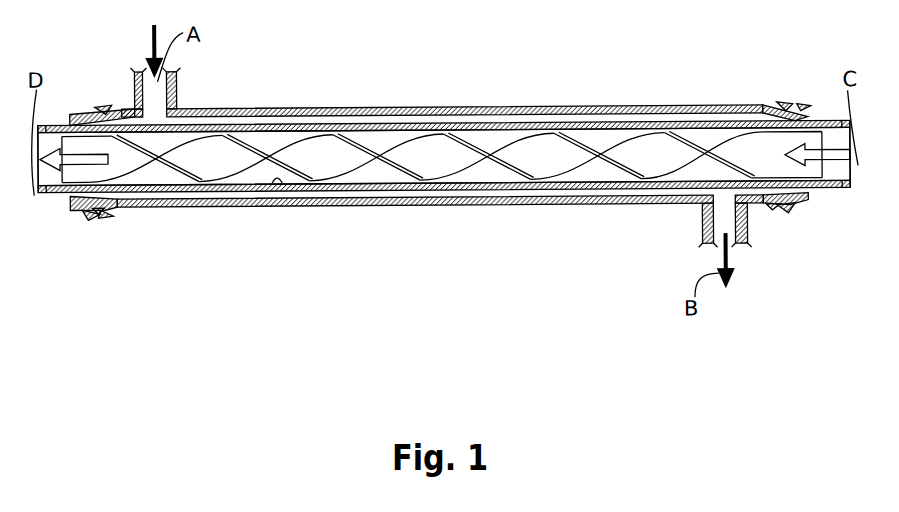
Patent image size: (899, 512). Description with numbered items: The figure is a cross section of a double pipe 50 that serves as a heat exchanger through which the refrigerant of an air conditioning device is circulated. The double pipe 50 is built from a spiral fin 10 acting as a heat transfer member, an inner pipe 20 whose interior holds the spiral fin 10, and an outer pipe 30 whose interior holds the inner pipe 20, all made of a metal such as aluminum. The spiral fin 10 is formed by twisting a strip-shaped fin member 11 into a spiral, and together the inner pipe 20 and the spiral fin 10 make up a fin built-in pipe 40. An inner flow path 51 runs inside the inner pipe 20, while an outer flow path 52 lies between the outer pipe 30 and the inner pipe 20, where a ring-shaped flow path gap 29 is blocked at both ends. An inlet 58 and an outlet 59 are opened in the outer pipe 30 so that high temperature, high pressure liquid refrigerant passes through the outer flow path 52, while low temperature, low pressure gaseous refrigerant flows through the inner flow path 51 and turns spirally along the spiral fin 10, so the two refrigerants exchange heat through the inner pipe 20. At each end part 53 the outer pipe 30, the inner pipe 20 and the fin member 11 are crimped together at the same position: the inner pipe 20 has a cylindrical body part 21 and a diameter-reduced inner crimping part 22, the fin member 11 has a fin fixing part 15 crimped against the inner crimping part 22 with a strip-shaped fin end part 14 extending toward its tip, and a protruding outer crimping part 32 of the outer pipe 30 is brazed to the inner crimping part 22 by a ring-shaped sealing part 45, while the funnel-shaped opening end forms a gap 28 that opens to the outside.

The spiral fin 10 is at (444, 224).
The fin member 11 is at (356, 178).
The fin end part 14 is at (40, 127).
The fin fixing part 15 is at (801, 108).
The inner pipe 20 is at (231, 188).
The body part 21 is at (287, 185).
The inner crimping part 22 is at (102, 110).
The gap 28 is at (62, 196).
The flow path gap 29 is at (325, 123).
The outer pipe 30 is at (494, 205).
The outer crimping part 32 is at (98, 111).
The fin built-in pipe 40 is at (437, 169).
The sealing part 45 is at (81, 198).
The double pipe 50 is at (432, 171).
The inner flow path 51 is at (440, 257).
The outer flow path 52 is at (442, 68).
The end part 53 is at (96, 204).
The inlet 58 is at (165, 82).
The outlet 59 is at (702, 228).